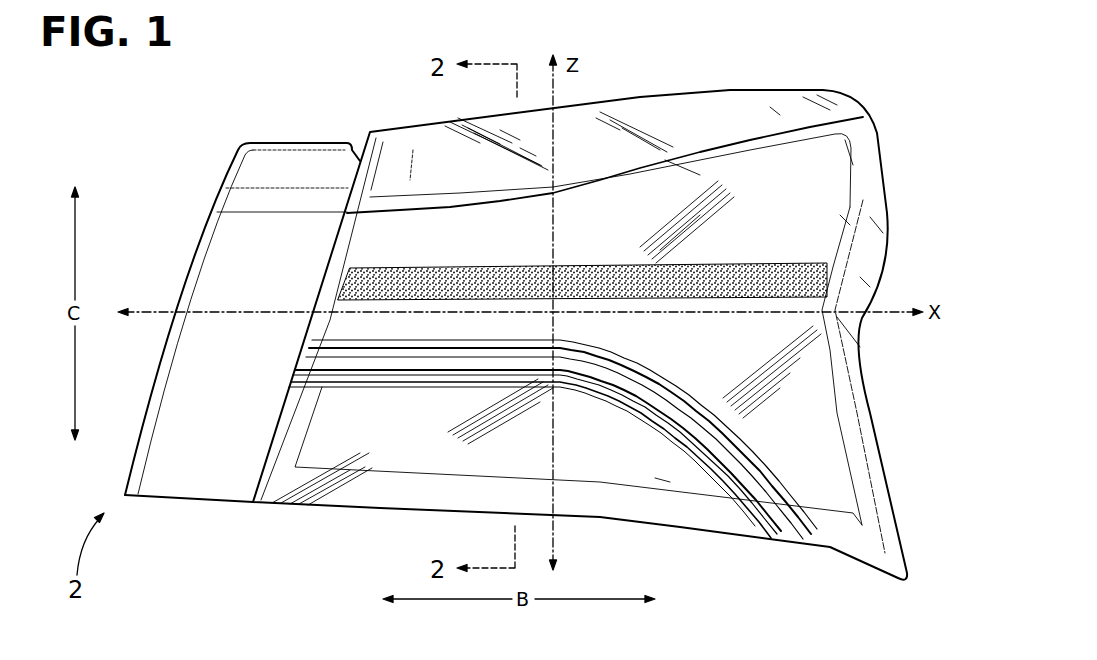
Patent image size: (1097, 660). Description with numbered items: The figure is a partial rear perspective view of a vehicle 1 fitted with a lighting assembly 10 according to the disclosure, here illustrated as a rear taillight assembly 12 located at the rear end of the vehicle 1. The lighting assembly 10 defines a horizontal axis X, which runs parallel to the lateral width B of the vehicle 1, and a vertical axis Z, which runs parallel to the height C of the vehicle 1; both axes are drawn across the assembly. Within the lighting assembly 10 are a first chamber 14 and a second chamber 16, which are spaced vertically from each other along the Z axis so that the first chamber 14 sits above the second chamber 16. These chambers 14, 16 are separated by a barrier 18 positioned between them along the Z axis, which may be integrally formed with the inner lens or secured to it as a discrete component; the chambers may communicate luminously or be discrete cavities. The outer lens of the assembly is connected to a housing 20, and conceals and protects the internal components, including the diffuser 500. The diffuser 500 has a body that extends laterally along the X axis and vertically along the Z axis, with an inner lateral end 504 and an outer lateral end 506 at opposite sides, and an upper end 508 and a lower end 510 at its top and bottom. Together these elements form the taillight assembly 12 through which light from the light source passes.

The vehicle 1 is at (214, 140).
The lighting assembly 10 is at (780, 64).
The rear taillight assembly 12 is at (814, 83).
The first chamber 14 is at (817, 173).
The second chamber 16 is at (805, 432).
The barrier 18 is at (588, 267).
The housing 20 is at (892, 507).
The diffuser 500 is at (757, 368).
The inner lateral end 504 is at (378, 252).
The outer lateral end 506 is at (827, 220).
The upper end 508 is at (682, 170).
The lower end 510 is at (662, 480).